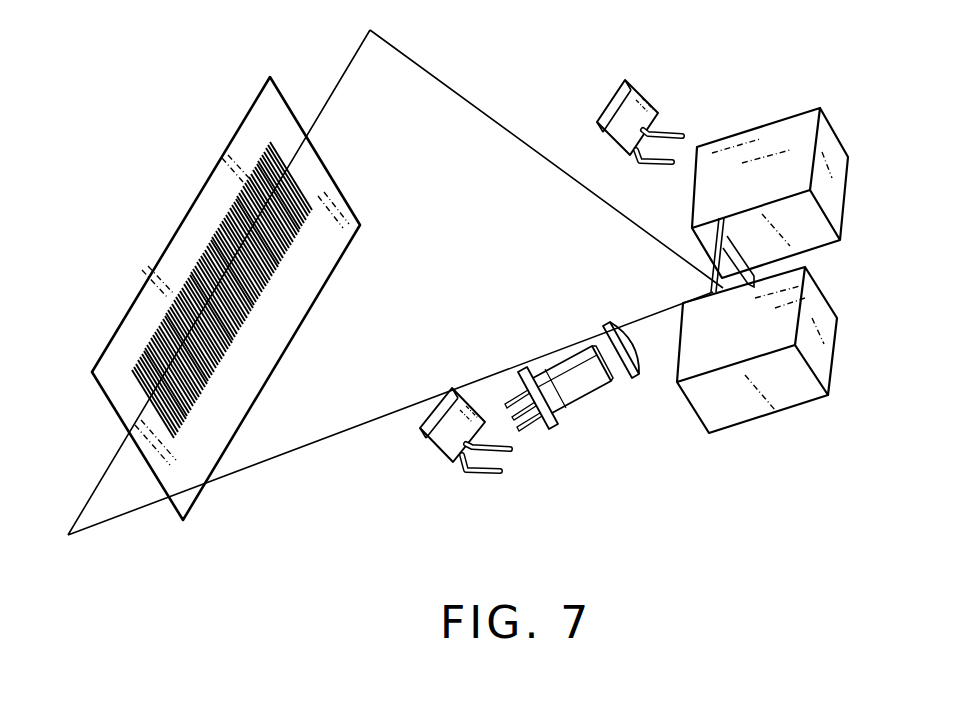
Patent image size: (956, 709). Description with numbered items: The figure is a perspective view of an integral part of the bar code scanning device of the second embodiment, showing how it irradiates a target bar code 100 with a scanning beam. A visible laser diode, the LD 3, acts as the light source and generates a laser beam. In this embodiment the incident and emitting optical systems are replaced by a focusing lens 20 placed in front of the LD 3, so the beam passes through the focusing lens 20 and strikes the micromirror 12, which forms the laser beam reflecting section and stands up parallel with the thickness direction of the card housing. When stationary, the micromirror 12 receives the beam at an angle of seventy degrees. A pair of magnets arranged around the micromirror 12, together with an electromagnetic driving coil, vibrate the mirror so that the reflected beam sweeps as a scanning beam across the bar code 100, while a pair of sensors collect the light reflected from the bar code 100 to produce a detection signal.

The target bar code 100 is at (198, 258).
The visible laser diode (LD) 3 is at (580, 402).
The focusing lens 20 is at (629, 378).
The micromirror (laser beam reflecting section) 12 is at (731, 282).